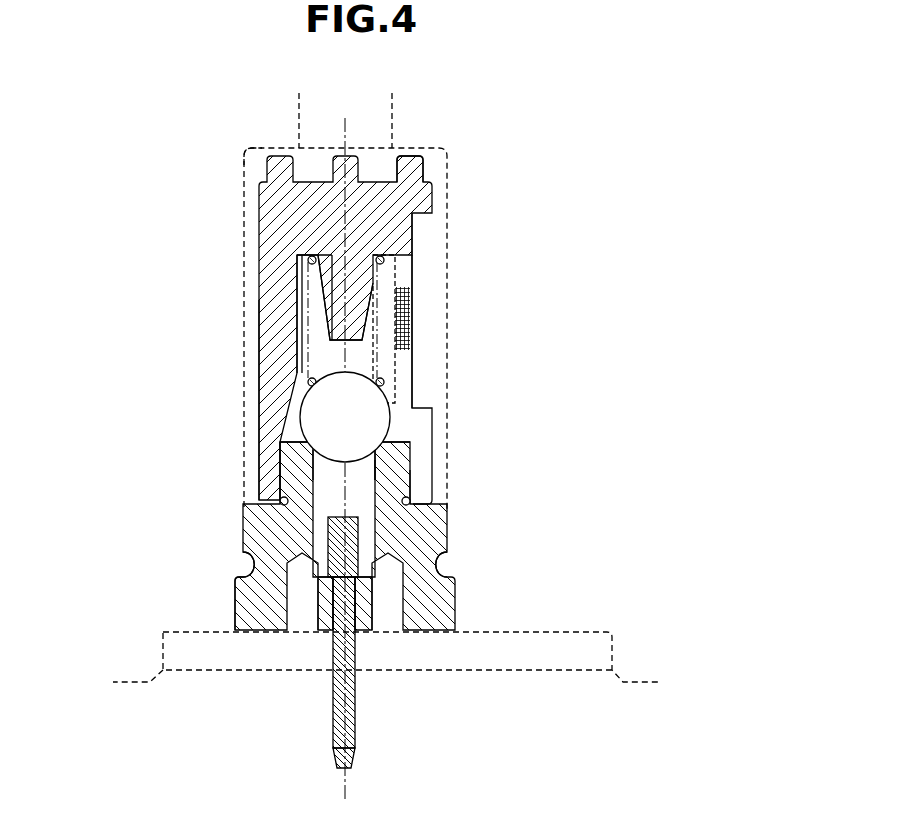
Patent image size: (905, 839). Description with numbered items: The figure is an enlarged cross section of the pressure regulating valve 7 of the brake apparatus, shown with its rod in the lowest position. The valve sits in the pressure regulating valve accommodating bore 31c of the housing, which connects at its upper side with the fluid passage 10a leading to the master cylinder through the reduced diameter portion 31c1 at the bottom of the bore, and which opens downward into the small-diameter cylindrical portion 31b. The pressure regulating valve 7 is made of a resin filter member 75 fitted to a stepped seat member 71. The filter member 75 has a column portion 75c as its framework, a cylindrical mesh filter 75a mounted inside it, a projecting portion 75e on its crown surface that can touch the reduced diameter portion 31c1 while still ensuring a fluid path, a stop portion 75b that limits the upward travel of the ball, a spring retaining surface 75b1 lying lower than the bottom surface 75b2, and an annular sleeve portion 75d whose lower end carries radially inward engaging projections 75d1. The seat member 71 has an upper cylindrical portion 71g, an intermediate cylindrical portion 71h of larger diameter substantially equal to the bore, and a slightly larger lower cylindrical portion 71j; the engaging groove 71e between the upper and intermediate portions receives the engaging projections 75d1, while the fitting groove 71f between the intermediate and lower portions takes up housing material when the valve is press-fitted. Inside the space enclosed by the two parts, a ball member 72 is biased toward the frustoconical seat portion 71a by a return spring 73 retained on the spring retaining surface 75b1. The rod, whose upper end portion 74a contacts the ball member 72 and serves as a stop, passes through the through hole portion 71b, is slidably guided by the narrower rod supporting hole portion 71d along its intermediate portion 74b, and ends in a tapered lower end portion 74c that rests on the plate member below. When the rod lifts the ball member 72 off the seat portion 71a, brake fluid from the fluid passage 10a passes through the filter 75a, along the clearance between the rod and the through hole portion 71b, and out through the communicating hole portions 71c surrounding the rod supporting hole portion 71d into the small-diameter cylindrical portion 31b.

The pressure regulating valve 7 is at (358, 458).
The fluid passage 10a is at (393, 118).
The small-diameter cylindrical portion 31b is at (163, 652).
The pressure regulating valve accommodating bore 31c is at (248, 247).
The reduced diameter portion 31c1 is at (250, 150).
The seat member 71 is at (456, 613).
The seat portion 71a is at (375, 432).
The through hole portion 71b is at (413, 482).
The communicating hole portion 71c is at (395, 615).
The rod supporting hole portion 71d is at (345, 622).
The engaging groove 71e is at (415, 497).
The fitting groove 71f is at (437, 570).
The upper cylindrical portion 71g is at (368, 470).
The intermediate cylindrical portion 71h is at (240, 545).
The lower cylindrical portion 71j is at (235, 600).
The ball member 72 is at (370, 402).
The return spring 73 is at (395, 357).
The upper end portion 74a is at (358, 532).
The intermediate portion 74b is at (333, 710).
The lower end portion 74c is at (355, 758).
The filter member 75 is at (259, 198).
The filter 75a is at (412, 275).
The stop portion 75b is at (338, 343).
The spring retaining surface 75b1 is at (302, 270).
The bottom surface 75b2 is at (412, 232).
The column portion 75c is at (272, 372).
The sleeve portion 75d is at (265, 482).
The engaging projection 75d1 is at (282, 505).
The projecting portion 75e is at (418, 167).